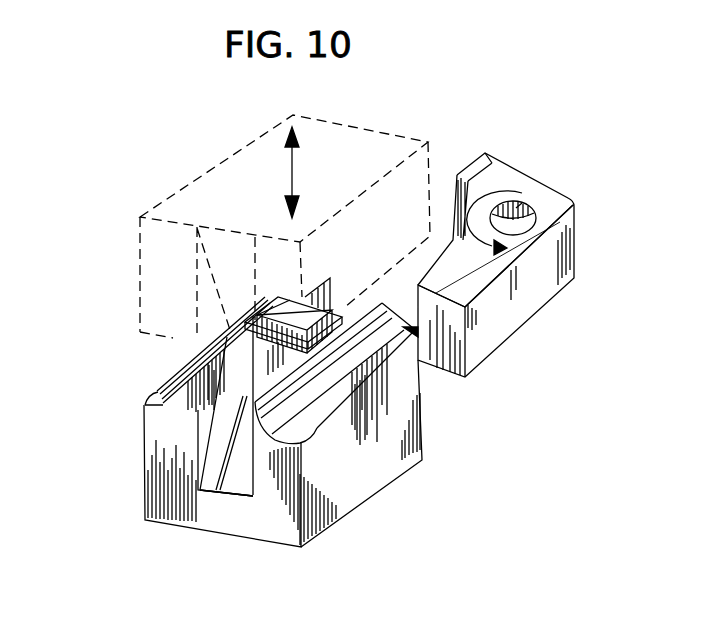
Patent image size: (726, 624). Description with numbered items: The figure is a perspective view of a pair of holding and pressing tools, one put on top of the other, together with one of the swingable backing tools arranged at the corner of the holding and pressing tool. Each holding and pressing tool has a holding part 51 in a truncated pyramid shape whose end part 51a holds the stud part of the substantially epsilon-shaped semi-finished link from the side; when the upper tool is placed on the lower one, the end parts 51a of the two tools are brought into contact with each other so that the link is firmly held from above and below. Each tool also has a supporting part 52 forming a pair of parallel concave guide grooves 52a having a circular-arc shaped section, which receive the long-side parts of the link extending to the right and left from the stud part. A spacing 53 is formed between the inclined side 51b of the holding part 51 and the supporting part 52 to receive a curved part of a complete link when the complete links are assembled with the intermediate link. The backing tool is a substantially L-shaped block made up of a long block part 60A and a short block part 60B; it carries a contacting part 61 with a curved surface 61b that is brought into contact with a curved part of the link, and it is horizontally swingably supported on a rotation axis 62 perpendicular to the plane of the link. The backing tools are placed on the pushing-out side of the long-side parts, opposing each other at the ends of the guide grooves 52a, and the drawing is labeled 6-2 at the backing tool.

The holding part 51 is at (312, 303).
The end part 51a is at (190, 354).
The inclined side 51b is at (240, 485).
The supporting part 52 is at (163, 430).
The concave guide groove 52a is at (162, 326).
The spacing 53 is at (213, 320).
The long block part 60A is at (460, 293).
The short block part 60B is at (494, 168).
The contacting part 61 is at (462, 253).
The curved surface 61b is at (505, 222).
The rotation axis 62 is at (522, 203).
The cutter unit 6-2 is at (522, 299).